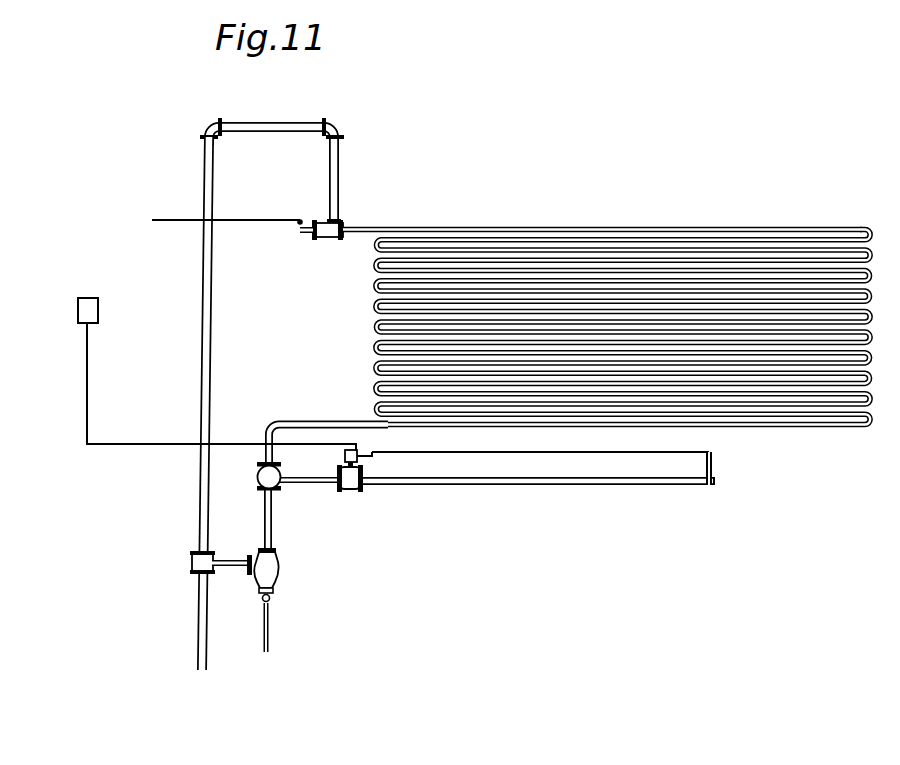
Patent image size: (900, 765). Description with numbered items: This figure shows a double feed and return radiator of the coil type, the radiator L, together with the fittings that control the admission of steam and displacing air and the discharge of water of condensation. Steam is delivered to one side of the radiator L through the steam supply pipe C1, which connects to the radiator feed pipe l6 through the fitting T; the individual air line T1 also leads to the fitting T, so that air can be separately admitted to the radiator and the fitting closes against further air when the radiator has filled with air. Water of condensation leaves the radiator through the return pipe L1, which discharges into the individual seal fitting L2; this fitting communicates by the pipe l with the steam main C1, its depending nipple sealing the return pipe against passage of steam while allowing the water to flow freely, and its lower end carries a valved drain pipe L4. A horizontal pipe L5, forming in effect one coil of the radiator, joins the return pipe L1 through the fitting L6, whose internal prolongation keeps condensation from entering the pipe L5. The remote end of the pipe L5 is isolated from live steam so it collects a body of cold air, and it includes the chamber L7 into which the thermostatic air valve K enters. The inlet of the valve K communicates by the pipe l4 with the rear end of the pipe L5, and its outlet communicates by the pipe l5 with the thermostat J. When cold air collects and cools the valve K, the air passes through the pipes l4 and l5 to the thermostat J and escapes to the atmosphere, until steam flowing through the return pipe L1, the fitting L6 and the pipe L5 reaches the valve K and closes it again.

The steam supply pipe C1 is at (214, 355).
The fitting T is at (340, 225).
The individual air line T1 is at (163, 220).
The feed pipe l6 is at (385, 236).
The radiator L is at (636, 236).
The return pipe L1 is at (310, 408).
The fitting L6 is at (257, 479).
The pipe l4 is at (572, 455).
The horizontal pipe L5 is at (664, 484).
The chamber L7 is at (350, 490).
The air valve K is at (365, 457).
The thermostat J is at (100, 306).
The pipe l5 is at (160, 447).
The pipe l is at (236, 570).
The individual seal fitting L2 is at (280, 567).
The drain pipe L4 is at (270, 640).